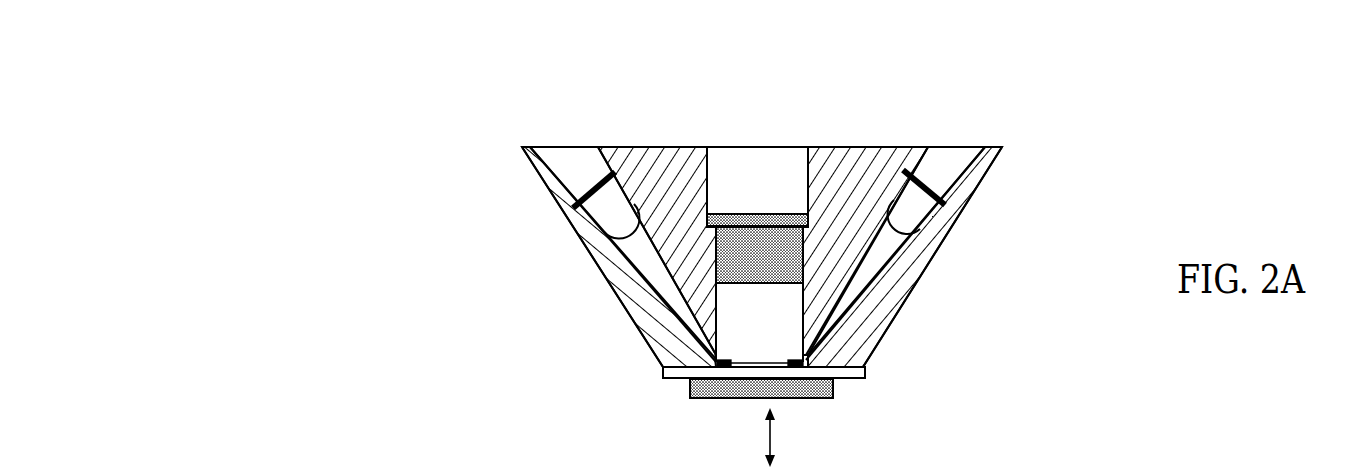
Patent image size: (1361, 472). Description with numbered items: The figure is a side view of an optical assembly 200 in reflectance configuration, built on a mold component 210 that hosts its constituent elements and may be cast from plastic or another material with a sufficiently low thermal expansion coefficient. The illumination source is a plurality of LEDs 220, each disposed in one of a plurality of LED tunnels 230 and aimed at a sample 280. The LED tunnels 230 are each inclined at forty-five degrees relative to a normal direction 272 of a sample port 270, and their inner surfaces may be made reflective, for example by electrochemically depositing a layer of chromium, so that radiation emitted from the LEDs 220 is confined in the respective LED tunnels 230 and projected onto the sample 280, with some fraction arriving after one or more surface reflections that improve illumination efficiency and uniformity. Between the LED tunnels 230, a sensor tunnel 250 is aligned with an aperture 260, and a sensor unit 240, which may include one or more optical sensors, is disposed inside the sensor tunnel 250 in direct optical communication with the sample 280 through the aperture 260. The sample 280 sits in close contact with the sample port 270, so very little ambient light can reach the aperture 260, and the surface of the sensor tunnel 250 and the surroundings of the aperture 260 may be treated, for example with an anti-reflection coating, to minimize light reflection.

The optical assembly 200 is at (352, 138).
The mold component 210 is at (662, 133).
The LEDs 220 is at (612, 205).
The LED tunnels 230 is at (663, 268).
The sensor unit 240 is at (770, 255).
The sensor tunnel 250 is at (770, 317).
The aperture 260 is at (763, 363).
The sample port 270 is at (850, 377).
The normal direction 272 is at (770, 437).
The sample 280 is at (743, 398).